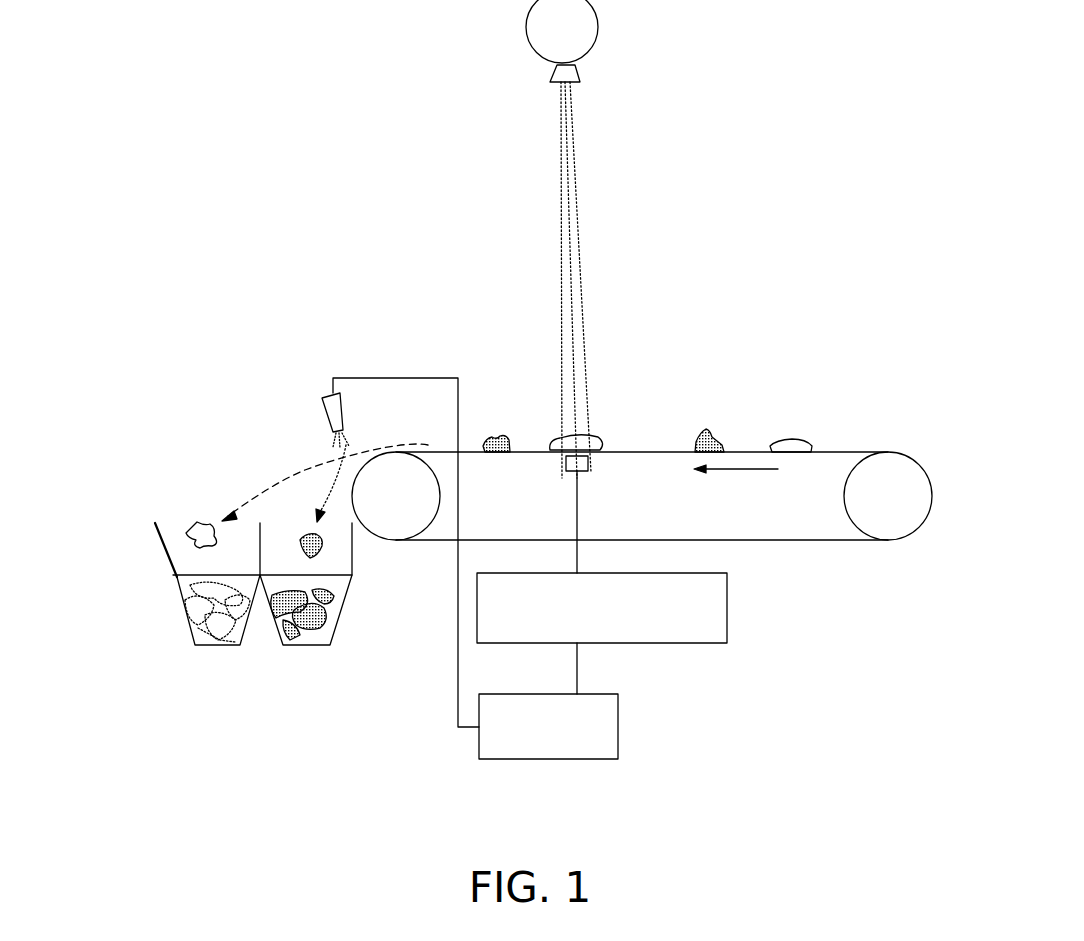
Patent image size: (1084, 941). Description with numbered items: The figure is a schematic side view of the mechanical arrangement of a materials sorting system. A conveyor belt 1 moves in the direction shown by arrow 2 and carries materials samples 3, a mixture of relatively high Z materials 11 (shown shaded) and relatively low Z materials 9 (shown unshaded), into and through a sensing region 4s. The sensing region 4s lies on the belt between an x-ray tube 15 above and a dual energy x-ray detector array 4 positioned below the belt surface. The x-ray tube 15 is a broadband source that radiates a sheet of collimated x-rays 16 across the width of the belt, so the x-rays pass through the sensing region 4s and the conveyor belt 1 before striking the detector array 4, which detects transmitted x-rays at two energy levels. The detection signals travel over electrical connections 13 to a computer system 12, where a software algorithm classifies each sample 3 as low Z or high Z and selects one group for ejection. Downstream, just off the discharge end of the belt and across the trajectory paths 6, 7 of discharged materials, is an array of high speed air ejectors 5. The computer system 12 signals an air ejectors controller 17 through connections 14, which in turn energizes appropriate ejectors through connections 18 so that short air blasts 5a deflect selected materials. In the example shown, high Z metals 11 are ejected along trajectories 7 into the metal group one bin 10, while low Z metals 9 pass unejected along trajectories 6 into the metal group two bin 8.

The conveyor belt 1 is at (842, 450).
The arrow 2 is at (736, 484).
The materials samples 3 is at (593, 436).
The dual energy x-ray detector array 4 is at (589, 460).
The sensing region 4s is at (568, 447).
The air ejectors array 5 is at (328, 412).
The air blasts 5a is at (353, 438).
The trajectories 6 is at (265, 488).
The trajectories 7 is at (316, 509).
The metal group 2 bin 8 is at (187, 587).
The relatively low Z materials 9 is at (193, 538).
The metal group 1 bin 10 is at (315, 642).
The relatively high Z materials 11 is at (320, 550).
The computer system 12 is at (728, 622).
The electrical connections 13 is at (580, 507).
The connections 14 is at (578, 667).
The x-ray tube 15 is at (533, 33).
The sheet of collimated x-rays 16 is at (566, 278).
The air ejectors controller 17 is at (620, 740).
The connections 18 is at (458, 676).